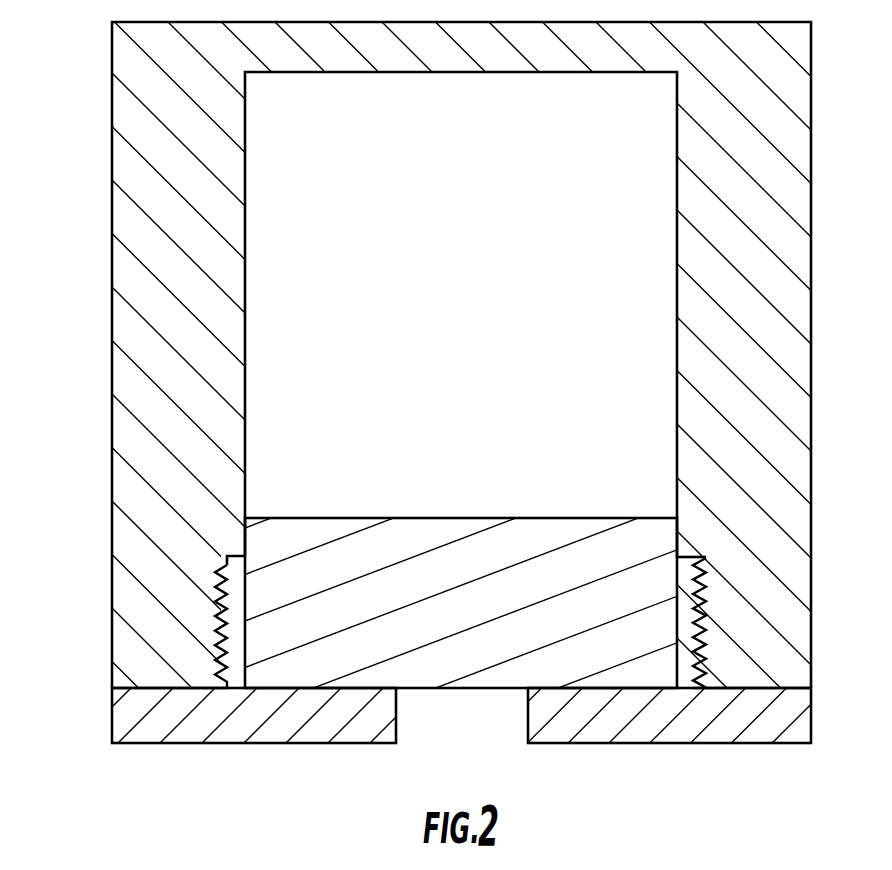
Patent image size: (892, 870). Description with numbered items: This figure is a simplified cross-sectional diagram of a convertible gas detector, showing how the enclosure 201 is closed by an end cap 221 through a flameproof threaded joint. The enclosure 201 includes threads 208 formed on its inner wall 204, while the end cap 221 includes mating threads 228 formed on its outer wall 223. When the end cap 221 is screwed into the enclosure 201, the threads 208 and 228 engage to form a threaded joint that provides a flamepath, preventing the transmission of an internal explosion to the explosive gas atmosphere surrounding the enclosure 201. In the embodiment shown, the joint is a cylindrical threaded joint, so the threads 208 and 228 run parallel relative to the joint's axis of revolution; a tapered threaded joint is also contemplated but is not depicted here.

The enclosure 201 is at (112, 277).
The inner wall 204 is at (245, 568).
The threads 208 is at (215, 565).
The end cap 221 is at (270, 786).
The outer wall 223 is at (196, 662).
The threads 228 is at (218, 610).